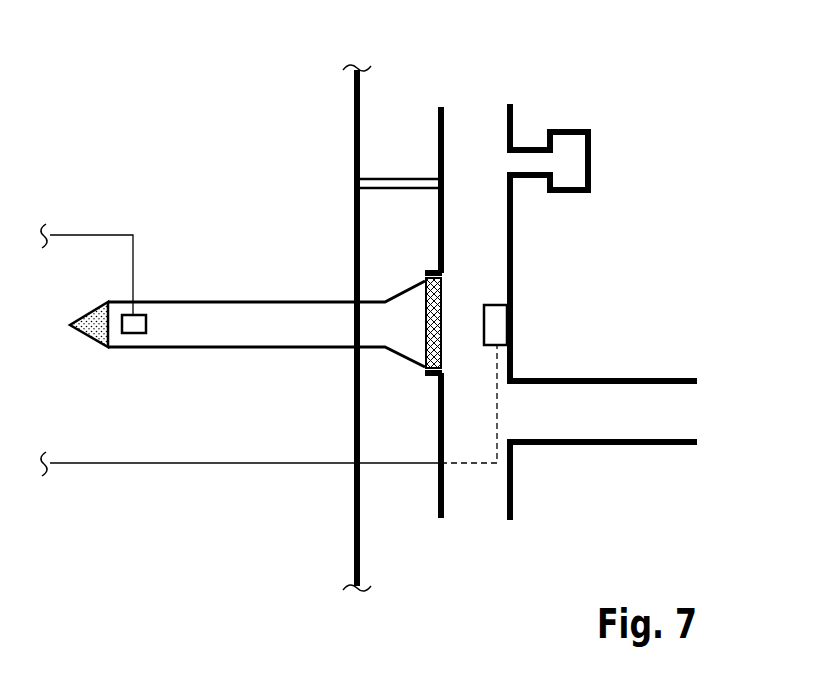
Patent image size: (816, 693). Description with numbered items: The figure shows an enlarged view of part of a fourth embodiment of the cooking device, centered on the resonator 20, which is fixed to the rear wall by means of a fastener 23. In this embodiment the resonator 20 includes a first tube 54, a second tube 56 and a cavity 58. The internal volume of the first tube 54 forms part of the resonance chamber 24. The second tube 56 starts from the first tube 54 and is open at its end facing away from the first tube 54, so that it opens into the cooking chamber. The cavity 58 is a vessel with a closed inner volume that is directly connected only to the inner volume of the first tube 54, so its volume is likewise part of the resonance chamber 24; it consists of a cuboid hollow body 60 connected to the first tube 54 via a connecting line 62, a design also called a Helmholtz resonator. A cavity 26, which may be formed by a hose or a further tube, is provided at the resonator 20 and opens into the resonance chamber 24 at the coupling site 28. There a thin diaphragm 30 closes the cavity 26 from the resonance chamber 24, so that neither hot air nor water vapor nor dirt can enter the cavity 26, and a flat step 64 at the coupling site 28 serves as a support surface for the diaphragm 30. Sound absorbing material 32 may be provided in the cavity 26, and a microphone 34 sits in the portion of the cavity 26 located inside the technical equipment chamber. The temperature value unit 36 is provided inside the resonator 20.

The resonator 20 is at (602, 261).
The fastener 23 is at (382, 182).
The resonance chamber 24 is at (468, 118).
The cavity 26 is at (246, 312).
The coupling site 28 is at (494, 315).
The diaphragm 30 is at (442, 342).
The sound absorbing material 32 is at (90, 330).
The microphone 34 is at (138, 322).
The temperature value unit 36 is at (498, 328).
The first tube 54 is at (512, 225).
The second tube 56 is at (643, 430).
The cavity 58 is at (608, 131).
The cuboid hollow body 60 is at (588, 162).
The connecting line 62 is at (525, 140).
The step 64 is at (412, 271).